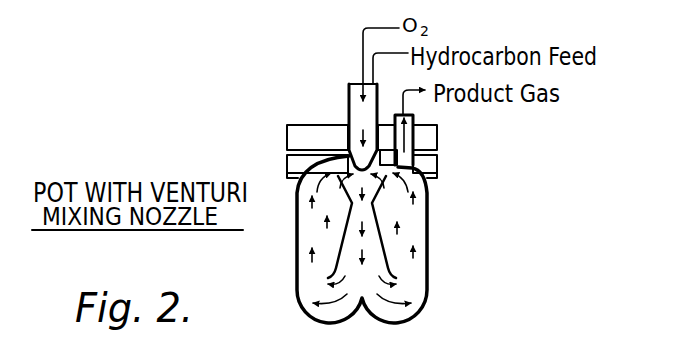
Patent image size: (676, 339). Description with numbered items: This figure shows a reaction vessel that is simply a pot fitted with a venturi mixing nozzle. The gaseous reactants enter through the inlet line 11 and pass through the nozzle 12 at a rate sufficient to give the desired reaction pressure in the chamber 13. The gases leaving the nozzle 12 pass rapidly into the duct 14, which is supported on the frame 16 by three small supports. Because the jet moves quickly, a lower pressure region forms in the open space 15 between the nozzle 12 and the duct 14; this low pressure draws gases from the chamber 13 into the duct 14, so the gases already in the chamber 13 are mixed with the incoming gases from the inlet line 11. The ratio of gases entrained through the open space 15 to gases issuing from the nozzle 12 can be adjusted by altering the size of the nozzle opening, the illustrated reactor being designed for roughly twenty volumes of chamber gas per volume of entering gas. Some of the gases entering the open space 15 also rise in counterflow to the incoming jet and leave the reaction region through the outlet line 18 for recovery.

The inlet line 11 is at (363, 48).
The nozzle 12 is at (414, 172).
The chamber 13 is at (322, 207).
The duct 14 is at (365, 222).
The open space 15 is at (299, 181).
The frame 16 is at (312, 133).
The outlet line 18 is at (403, 97).